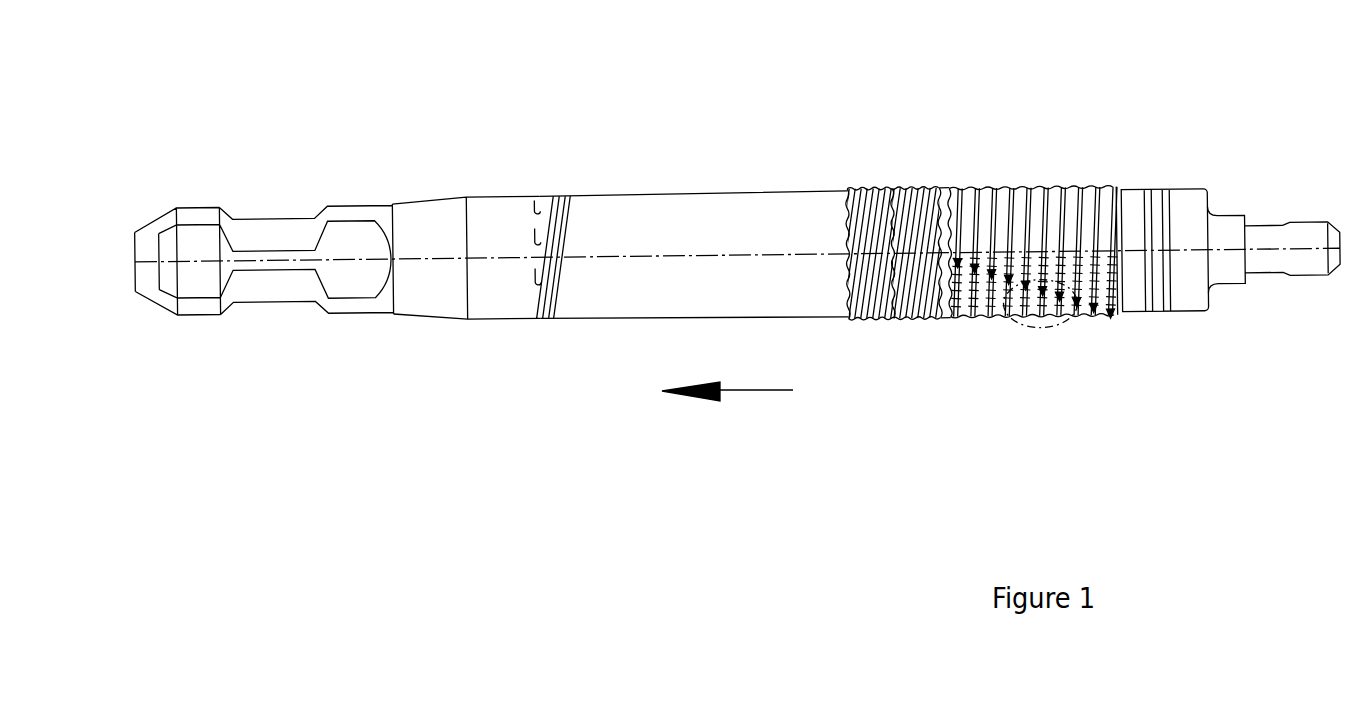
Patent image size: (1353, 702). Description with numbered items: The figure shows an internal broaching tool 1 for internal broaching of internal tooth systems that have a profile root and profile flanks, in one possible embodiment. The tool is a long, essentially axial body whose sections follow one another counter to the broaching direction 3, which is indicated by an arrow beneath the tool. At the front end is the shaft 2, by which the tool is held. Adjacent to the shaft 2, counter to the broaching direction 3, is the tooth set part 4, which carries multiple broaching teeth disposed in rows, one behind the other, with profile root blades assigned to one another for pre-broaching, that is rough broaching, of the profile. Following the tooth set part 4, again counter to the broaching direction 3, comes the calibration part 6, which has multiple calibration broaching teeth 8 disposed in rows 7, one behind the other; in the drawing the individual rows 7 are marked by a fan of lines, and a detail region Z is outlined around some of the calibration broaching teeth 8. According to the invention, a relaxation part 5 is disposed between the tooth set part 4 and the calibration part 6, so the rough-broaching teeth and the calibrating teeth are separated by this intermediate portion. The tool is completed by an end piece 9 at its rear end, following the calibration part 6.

The internal broaching tool 1 is at (497, 233).
The shaft 2 is at (203, 249).
The broaching direction 3 is at (727, 408).
The tooth set part 4 is at (663, 230).
The relaxation part 5 is at (904, 196).
The calibration part 6 is at (1175, 377).
The rows 7 is at (1113, 188).
The calibration broaching teeth 8 is at (1113, 309).
The end piece 9 is at (1273, 235).
The detail zone Z is at (1047, 319).